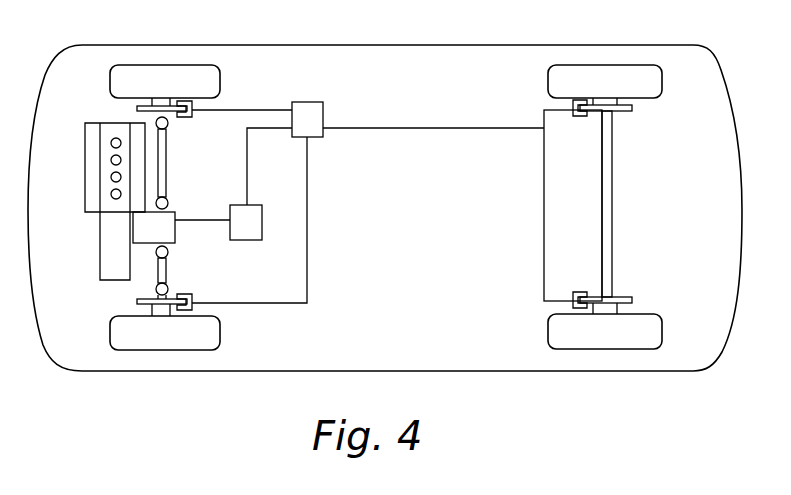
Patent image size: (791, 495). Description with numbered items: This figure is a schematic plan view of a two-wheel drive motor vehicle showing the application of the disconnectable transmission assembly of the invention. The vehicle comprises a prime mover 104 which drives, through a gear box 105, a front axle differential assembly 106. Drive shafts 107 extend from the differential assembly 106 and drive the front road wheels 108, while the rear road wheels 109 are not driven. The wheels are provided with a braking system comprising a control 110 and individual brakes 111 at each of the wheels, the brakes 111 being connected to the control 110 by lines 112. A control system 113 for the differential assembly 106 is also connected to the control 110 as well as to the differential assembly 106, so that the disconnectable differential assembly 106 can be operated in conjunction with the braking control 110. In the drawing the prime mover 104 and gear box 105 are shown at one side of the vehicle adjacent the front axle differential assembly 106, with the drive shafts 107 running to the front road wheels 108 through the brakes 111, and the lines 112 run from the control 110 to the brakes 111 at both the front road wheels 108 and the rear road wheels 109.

The prime mover 104 is at (106, 133).
The gear box 105 is at (104, 262).
The front axle differential assembly 106 is at (170, 238).
The drive shafts 107 is at (166, 178).
The front road wheels 108 is at (121, 72).
The rear road wheels 109 is at (612, 70).
The control 110 is at (312, 113).
The brakes 111 is at (182, 118).
The lines 112 is at (265, 110).
The control system 113 is at (250, 230).